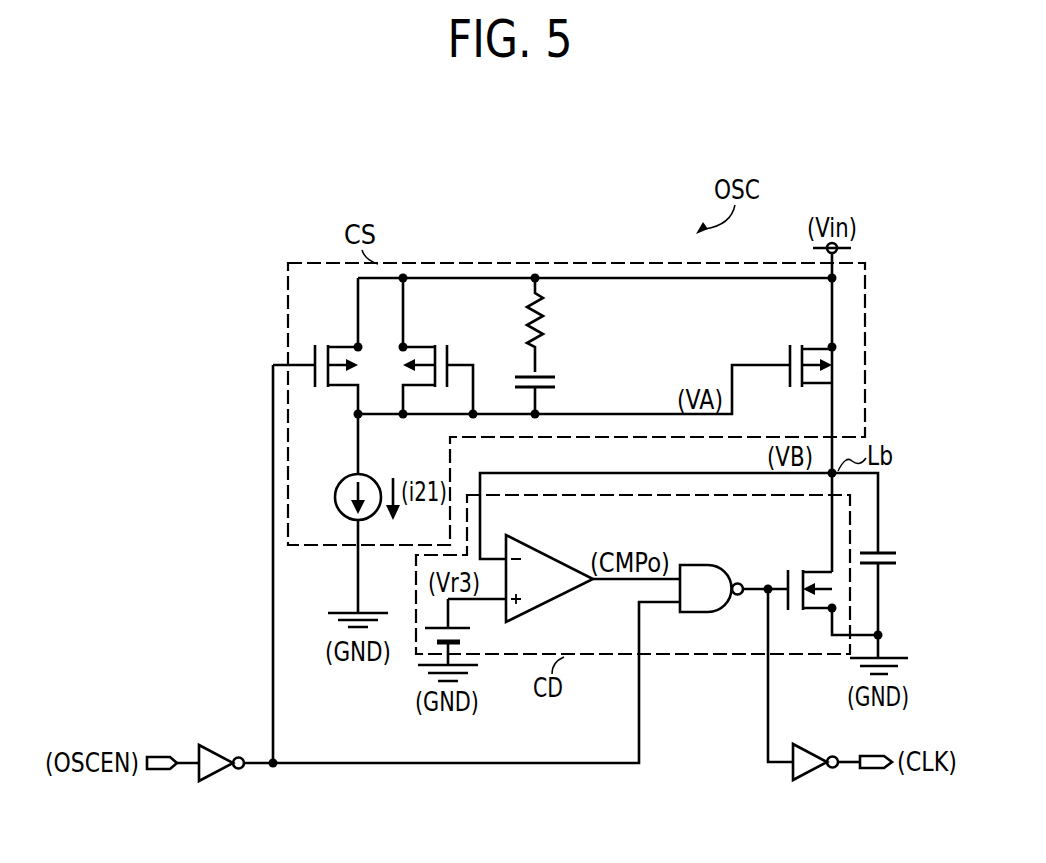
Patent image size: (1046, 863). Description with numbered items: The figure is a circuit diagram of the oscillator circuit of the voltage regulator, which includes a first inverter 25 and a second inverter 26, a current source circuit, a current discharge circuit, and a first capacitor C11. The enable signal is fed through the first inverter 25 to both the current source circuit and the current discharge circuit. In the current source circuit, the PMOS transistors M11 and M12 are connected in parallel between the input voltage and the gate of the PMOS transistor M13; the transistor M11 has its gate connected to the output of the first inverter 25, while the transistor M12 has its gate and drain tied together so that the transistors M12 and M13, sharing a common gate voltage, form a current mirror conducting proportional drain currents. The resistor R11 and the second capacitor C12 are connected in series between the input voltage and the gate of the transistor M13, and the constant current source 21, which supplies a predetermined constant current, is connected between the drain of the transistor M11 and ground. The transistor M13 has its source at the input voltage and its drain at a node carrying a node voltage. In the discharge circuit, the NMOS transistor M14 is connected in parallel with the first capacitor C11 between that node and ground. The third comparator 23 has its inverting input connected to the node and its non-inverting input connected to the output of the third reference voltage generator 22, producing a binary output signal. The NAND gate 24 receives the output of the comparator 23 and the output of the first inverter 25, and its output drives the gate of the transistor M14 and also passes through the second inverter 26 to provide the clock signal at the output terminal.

The constant current source 21 is at (342, 508).
The third reference voltage generator 22 is at (478, 632).
The third comparator 23 is at (545, 551).
The logic NAND gate 24 is at (700, 614).
The first inverter 25 is at (215, 775).
The second inverter 26 is at (810, 774).
The PMOS transistor M11 is at (315, 346).
The PMOS transistor M12 is at (438, 346).
The PMOS transistor M13 is at (807, 353).
The NMOS transistor M14 is at (807, 575).
The resistor R11 is at (559, 325).
The first capacitor C11 is at (900, 560).
The second capacitor C12 is at (556, 391).